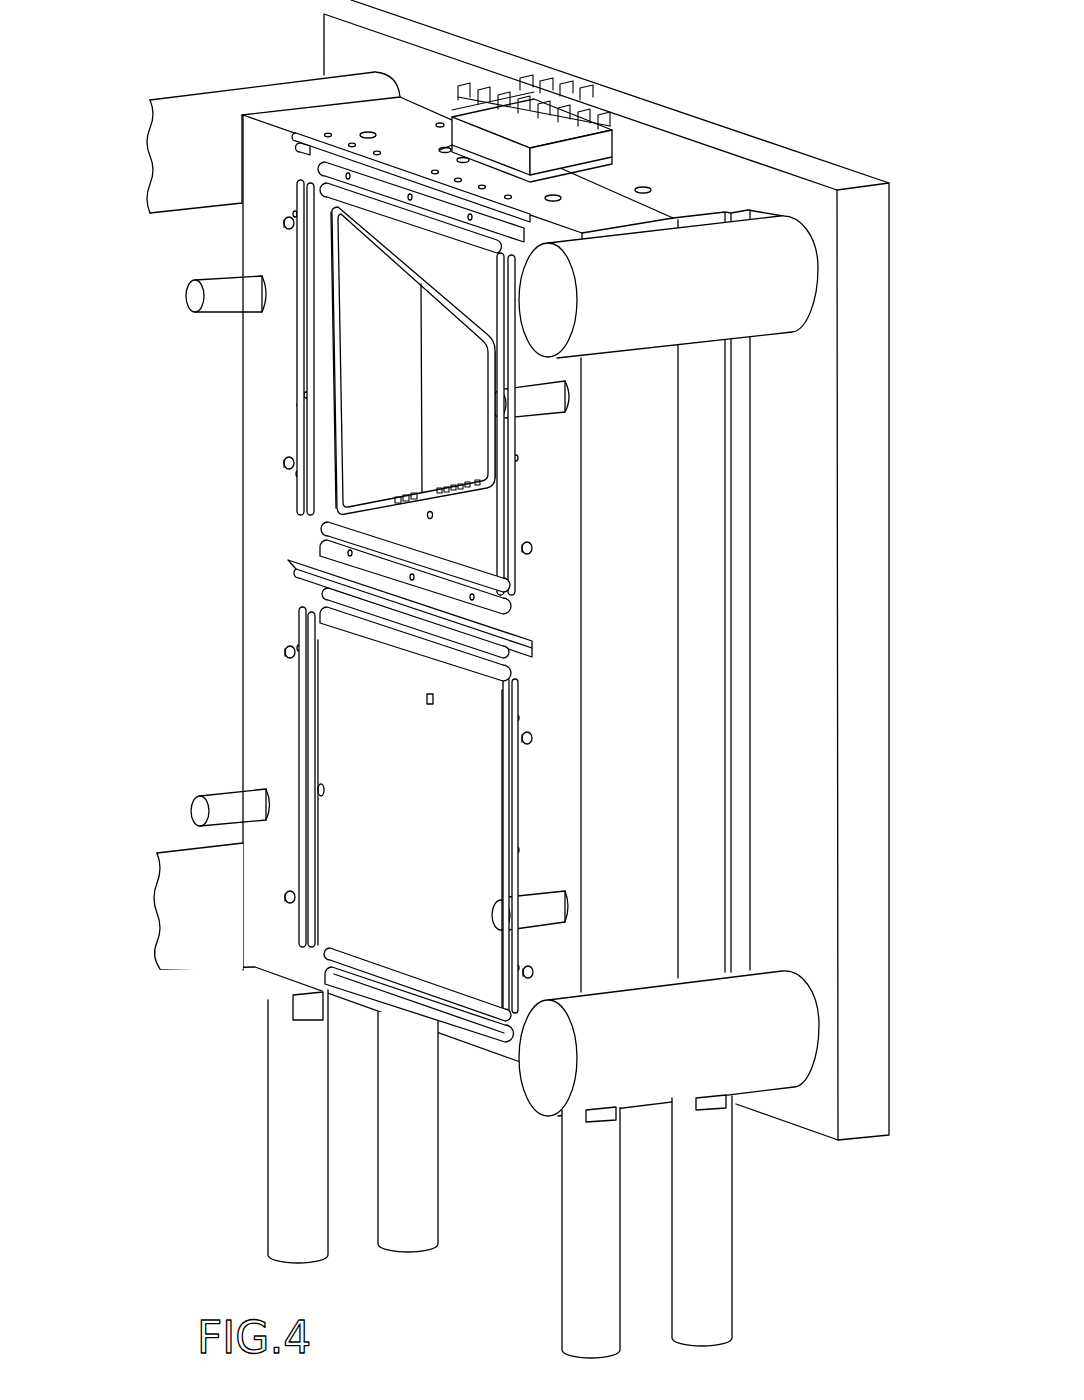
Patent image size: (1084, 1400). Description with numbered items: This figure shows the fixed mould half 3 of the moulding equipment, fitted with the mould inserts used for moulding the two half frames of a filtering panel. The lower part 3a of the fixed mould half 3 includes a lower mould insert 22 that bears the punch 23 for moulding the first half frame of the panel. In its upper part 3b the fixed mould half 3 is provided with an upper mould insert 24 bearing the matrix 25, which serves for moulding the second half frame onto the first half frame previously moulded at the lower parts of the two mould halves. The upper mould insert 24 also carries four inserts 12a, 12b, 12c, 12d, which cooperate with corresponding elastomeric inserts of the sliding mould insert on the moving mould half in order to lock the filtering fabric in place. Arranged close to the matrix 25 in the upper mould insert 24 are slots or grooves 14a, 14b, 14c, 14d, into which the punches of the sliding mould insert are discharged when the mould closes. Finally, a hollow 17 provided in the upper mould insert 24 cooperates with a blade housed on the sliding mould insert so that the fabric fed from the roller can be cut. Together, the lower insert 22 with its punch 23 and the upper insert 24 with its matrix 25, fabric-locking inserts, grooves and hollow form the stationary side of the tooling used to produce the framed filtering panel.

The fixed mould half 3 is at (685, 178).
The lower part of the fixed mould half 3a is at (274, 869).
The upper part of the fixed mould half 3b is at (272, 425).
The insert 12a is at (396, 178).
The insert 12b is at (275, 368).
The insert 12c is at (295, 544).
The insert 12d is at (536, 463).
The slot or groove 14a is at (487, 244).
The slot or groove 14b is at (297, 192).
The slot or groove 14c is at (452, 565).
The slot or groove 14d is at (500, 507).
The hollow 17 is at (293, 136).
The lower mould insert 22 is at (415, 921).
The punch 23 is at (332, 725).
The upper mould insert 24 is at (357, 291).
The matrix 25 is at (310, 500).